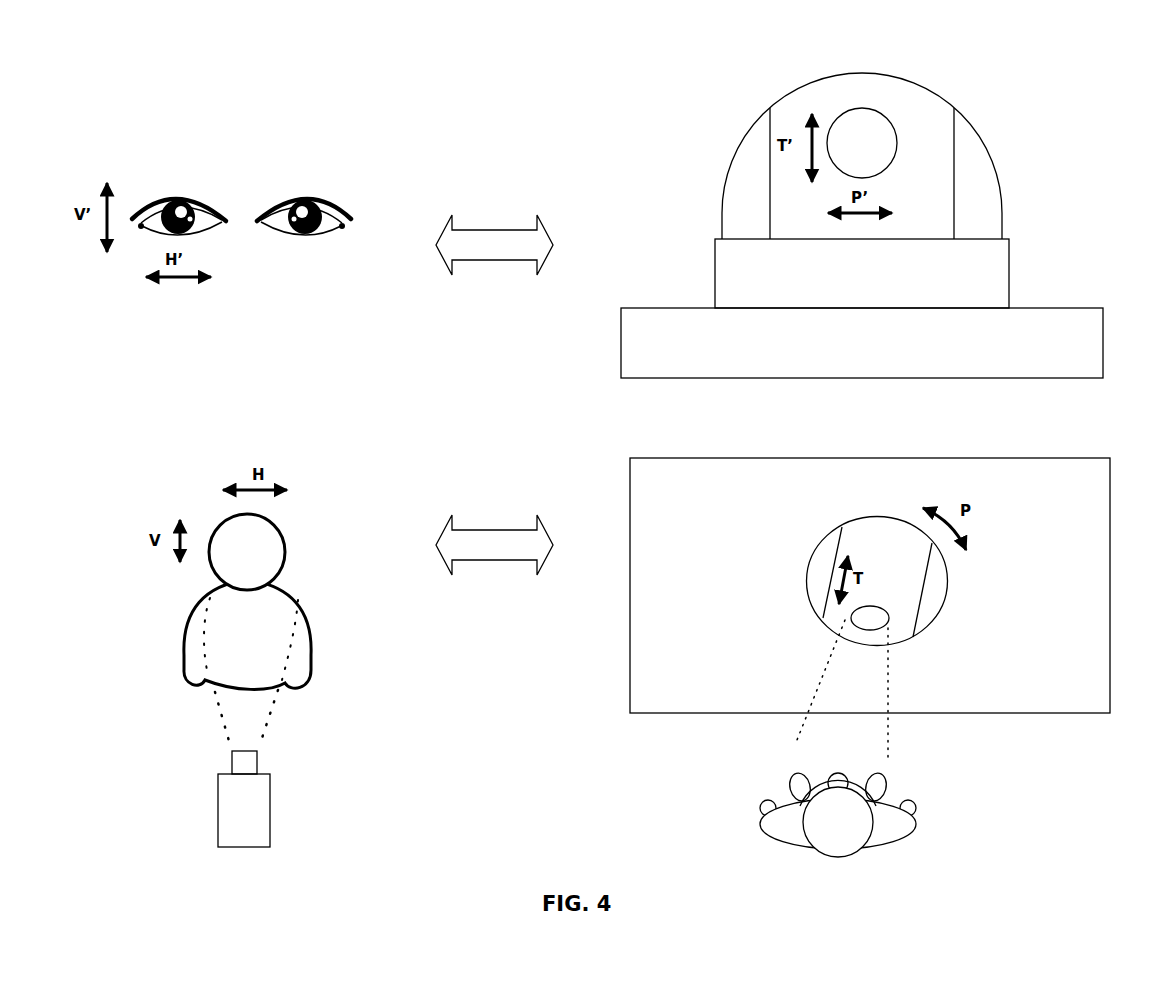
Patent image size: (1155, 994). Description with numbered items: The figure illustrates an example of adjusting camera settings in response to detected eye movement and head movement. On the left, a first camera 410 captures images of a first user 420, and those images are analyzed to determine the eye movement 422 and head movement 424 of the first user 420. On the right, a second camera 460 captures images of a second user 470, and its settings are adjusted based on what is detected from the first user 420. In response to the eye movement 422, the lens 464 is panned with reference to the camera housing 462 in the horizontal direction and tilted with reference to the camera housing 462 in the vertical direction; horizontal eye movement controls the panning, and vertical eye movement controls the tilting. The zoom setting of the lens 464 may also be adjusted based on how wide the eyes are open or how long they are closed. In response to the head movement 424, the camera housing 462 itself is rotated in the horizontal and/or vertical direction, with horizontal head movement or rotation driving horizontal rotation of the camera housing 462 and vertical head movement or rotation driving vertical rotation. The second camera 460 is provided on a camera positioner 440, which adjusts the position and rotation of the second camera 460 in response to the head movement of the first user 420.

The first camera 410 is at (246, 768).
The first user 420 is at (320, 510).
The eye movement 422 is at (241, 197).
The head movement 424 is at (247, 552).
The camera positioner 440 is at (865, 510).
The second camera 460 is at (726, 126).
The camera housing 462 is at (862, 438).
The lens 464 is at (855, 110).
The second user 470 is at (838, 814).